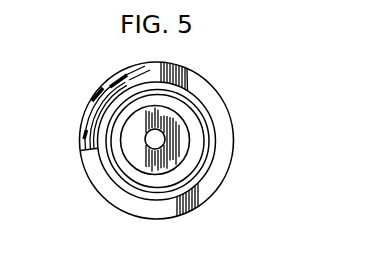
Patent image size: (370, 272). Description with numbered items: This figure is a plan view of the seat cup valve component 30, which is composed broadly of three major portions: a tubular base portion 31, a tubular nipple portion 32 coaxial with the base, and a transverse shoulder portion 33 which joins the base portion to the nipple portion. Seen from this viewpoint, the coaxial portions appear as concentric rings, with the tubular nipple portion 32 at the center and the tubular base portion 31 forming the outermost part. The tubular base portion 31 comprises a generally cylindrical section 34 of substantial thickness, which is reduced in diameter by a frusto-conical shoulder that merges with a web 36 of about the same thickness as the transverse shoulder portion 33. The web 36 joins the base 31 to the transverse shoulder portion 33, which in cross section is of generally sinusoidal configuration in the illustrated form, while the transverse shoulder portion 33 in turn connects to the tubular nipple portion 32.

The seat cup valve component 30 is at (161, 150).
The tubular base portion 31 is at (236, 174).
The tubular nipple portion 32 is at (187, 124).
The transverse shoulder portion 33 is at (122, 97).
The cylindrical section 34 is at (222, 146).
The web 36 is at (85, 112).